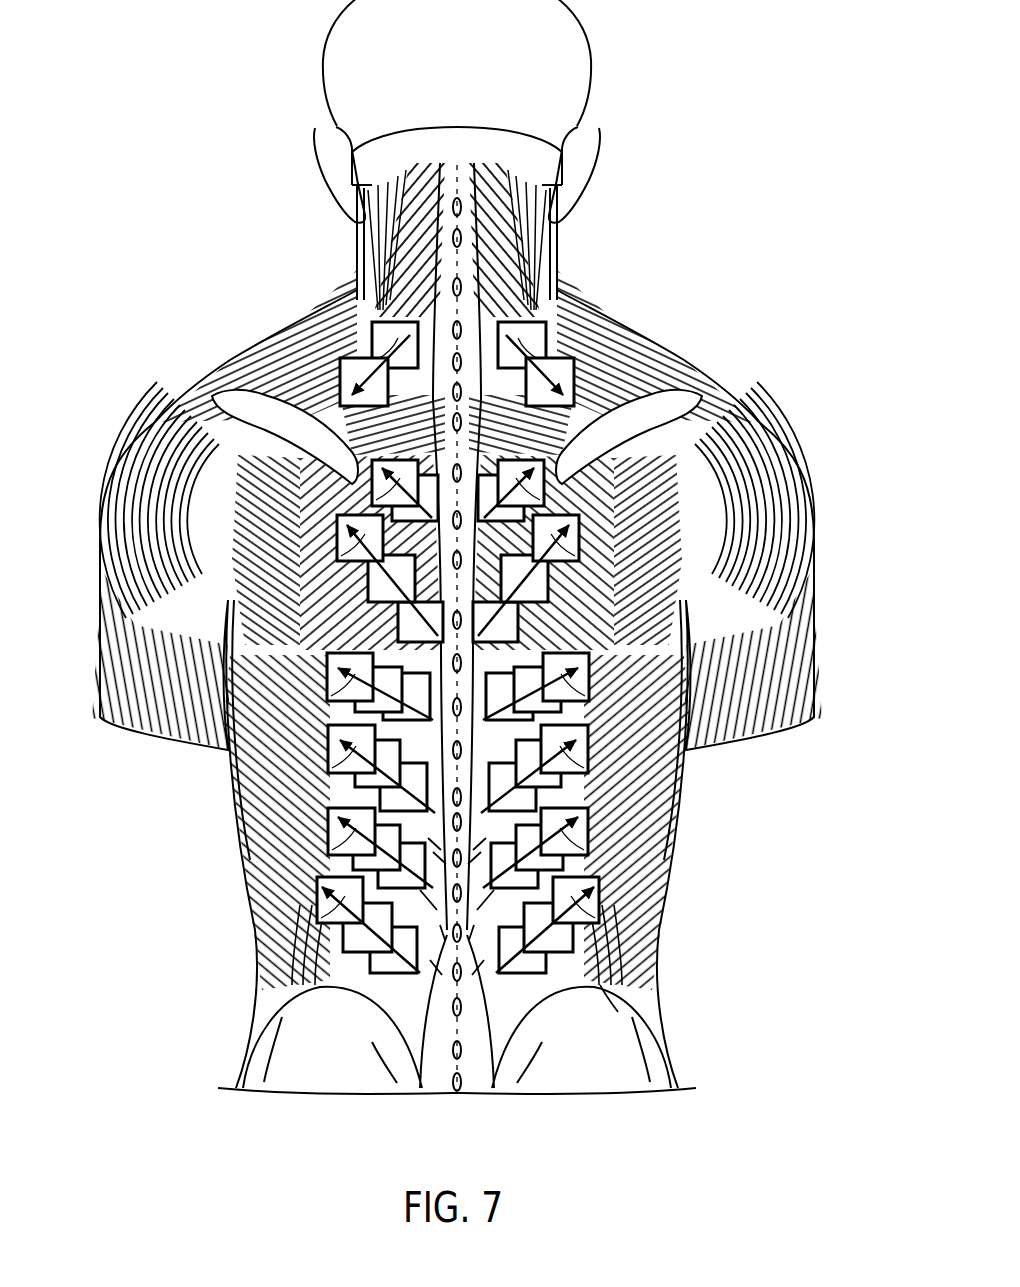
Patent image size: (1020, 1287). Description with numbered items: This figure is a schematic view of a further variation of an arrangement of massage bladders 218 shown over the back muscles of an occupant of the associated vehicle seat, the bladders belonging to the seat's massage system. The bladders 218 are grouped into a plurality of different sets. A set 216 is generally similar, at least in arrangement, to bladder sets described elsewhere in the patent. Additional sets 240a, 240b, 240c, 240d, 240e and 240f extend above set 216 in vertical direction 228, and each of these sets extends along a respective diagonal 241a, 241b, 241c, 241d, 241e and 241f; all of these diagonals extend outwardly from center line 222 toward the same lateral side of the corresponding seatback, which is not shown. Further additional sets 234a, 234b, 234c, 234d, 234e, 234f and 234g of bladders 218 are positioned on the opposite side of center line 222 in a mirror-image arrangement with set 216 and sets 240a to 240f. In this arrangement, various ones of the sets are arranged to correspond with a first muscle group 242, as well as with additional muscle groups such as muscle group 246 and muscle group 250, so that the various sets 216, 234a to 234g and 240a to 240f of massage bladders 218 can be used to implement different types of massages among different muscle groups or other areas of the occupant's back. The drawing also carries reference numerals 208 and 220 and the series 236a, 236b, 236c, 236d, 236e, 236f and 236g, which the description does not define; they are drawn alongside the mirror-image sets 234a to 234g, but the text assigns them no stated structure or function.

The muscle stimulation garment system 208 is at (695, 277).
The set of massage bladders 216 is at (618, 892).
The massage bladders 218 is at (587, 910).
The lumbar muscle 220 is at (617, 988).
The center line 222 is at (440, 985).
The vertical direction 228 is at (820, 792).
The set of massage bladders 234a is at (303, 898).
The set of massage bladders 234b is at (307, 827).
The set of massage bladders 234c is at (307, 750).
The set of massage bladders 234d is at (307, 673).
The set of massage bladders 234e is at (313, 540).
The set of massage bladders 234f is at (347, 485).
The set of massage bladders 234g is at (345, 355).
The left secondary electrode pad 236a is at (337, 967).
The left secondary electrode pad 236b is at (345, 857).
The left secondary electrode pad 236c is at (352, 765).
The left secondary electrode pad 236d is at (325, 700).
The left secondary electrode pad 236e is at (333, 597).
The left secondary electrode pad 236f is at (347, 498).
The left secondary electrode pad 236g is at (358, 345).
The set of massage bladders 240a is at (630, 820).
The set of massage bladders 240b is at (620, 745).
The set of massage bladders 240c is at (608, 655).
The set of massage bladders 240d is at (585, 530).
The set of massage bladders 240e is at (568, 470).
The set of massage bladders 240f is at (556, 335).
The diagonal 241a is at (625, 860).
The diagonal 241b is at (635, 790).
The diagonal 241c is at (640, 690).
The diagonal 241d is at (600, 560).
The diagonal 241e is at (600, 503).
The diagonal 241f is at (578, 345).
The first muscle group 242 is at (700, 688).
The muscle group 246 is at (700, 620).
The muscle group 250 is at (505, 305).